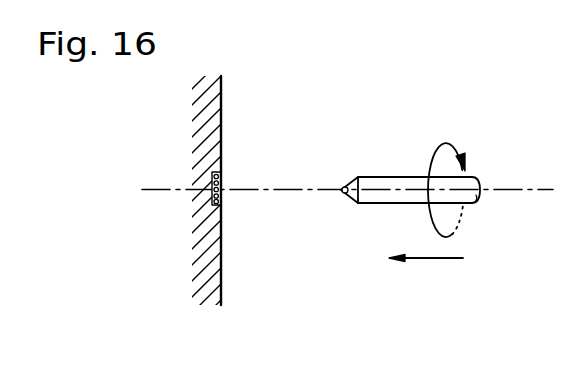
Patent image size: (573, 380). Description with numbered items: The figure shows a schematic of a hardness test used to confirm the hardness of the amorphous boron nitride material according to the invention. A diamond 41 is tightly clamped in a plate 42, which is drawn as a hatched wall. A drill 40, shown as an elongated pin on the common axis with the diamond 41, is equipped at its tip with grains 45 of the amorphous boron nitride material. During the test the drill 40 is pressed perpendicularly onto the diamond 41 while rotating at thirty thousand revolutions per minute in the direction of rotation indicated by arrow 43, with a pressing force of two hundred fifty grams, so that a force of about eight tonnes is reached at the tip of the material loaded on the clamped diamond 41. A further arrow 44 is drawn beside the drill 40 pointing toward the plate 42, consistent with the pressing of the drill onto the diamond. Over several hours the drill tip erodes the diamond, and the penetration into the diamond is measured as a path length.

The drill 40 is at (373, 181).
The diamond 41 is at (221, 197).
The plate 42 is at (219, 268).
The arrow 43 is at (428, 170).
The direction of movement 44 is at (433, 259).
The grains 45 is at (345, 188).